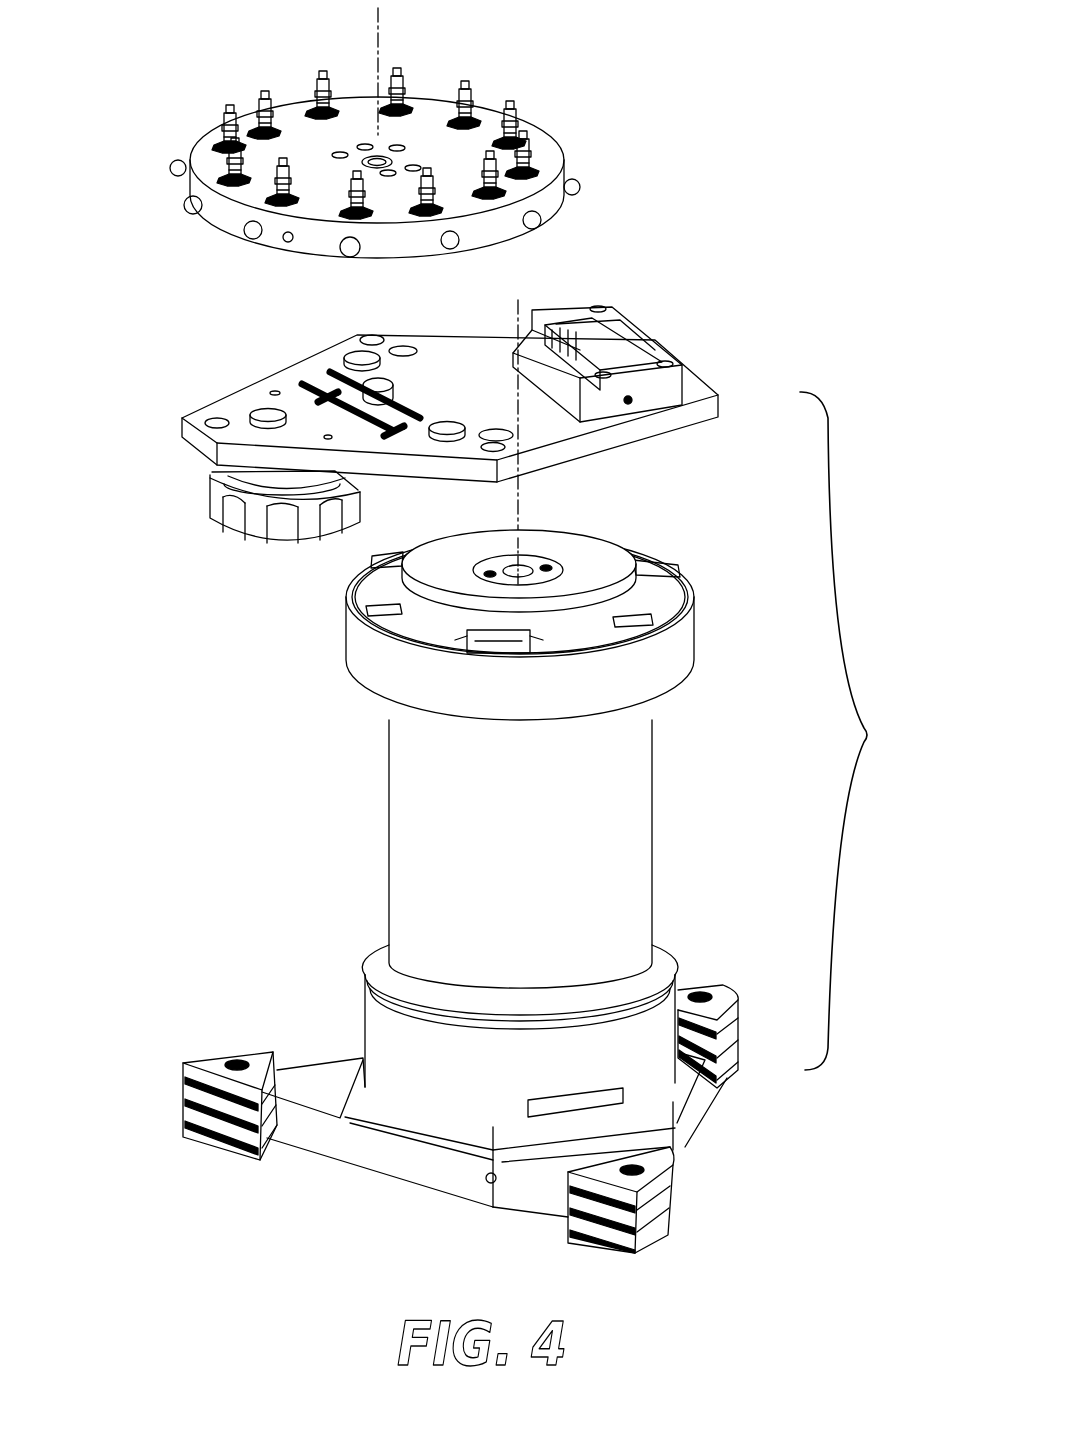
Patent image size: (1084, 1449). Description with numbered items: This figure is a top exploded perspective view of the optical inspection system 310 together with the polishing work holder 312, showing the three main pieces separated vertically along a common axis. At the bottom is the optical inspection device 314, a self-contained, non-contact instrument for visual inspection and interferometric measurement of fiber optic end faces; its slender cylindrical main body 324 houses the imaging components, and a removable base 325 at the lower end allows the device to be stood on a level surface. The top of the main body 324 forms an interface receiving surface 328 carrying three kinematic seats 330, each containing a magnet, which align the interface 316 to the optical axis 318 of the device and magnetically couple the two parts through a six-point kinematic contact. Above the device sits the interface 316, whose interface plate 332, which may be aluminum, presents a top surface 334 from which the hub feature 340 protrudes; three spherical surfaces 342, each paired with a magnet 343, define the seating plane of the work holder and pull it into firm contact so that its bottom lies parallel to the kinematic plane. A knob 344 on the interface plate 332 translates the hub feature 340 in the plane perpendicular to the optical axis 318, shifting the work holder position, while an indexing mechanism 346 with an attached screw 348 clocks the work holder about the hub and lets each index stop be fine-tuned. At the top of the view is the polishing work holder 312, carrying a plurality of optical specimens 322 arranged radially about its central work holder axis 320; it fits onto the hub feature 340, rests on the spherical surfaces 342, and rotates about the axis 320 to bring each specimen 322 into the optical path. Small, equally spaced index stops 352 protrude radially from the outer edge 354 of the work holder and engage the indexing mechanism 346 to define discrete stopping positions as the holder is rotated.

The optical inspection system 310 is at (861, 731).
The polishing work holder 312 is at (427, 97).
The optical inspection device 314 is at (552, 822).
The interface 316 is at (668, 433).
The optical axis 318 is at (520, 488).
The central work holder axis 320 is at (378, 52).
The optical specimens 322 is at (310, 90).
The main body 324 is at (386, 840).
The base 325 is at (405, 1150).
The interface receiving surface 328 is at (615, 560).
The kinematic seats 330 is at (668, 557).
The interface plate 332 is at (690, 367).
The top surface 334 is at (457, 352).
The hub feature 340 is at (382, 385).
The spherical surfaces 342 is at (215, 422).
The magnets 343 is at (277, 412).
The knob 344 is at (212, 503).
The indexing mechanism 346 is at (642, 316).
The screw 348 is at (535, 318).
The index stops 352 is at (580, 188).
The outer edge 354 is at (497, 227).